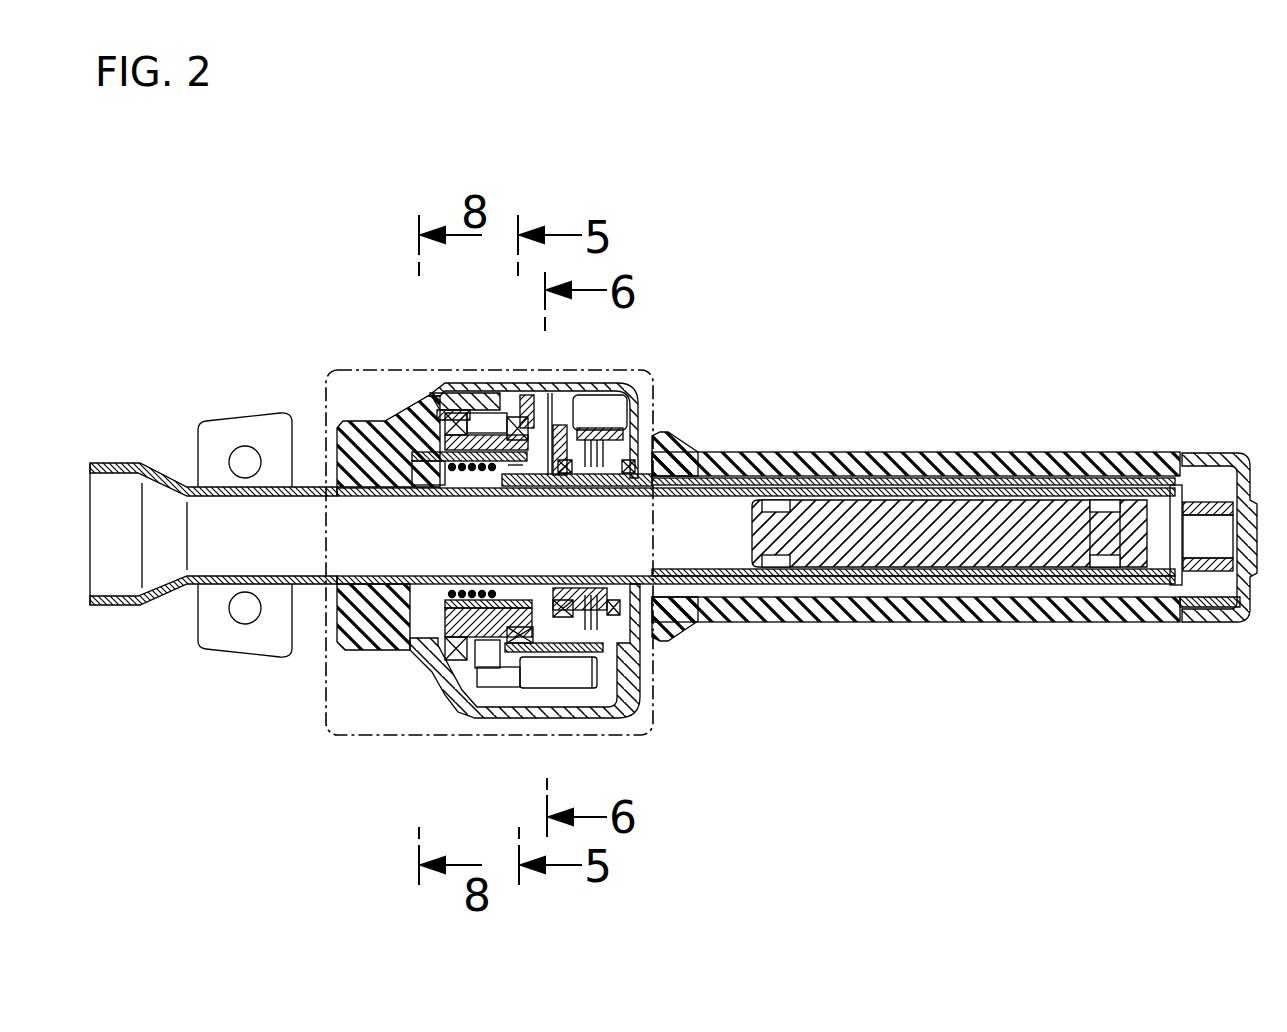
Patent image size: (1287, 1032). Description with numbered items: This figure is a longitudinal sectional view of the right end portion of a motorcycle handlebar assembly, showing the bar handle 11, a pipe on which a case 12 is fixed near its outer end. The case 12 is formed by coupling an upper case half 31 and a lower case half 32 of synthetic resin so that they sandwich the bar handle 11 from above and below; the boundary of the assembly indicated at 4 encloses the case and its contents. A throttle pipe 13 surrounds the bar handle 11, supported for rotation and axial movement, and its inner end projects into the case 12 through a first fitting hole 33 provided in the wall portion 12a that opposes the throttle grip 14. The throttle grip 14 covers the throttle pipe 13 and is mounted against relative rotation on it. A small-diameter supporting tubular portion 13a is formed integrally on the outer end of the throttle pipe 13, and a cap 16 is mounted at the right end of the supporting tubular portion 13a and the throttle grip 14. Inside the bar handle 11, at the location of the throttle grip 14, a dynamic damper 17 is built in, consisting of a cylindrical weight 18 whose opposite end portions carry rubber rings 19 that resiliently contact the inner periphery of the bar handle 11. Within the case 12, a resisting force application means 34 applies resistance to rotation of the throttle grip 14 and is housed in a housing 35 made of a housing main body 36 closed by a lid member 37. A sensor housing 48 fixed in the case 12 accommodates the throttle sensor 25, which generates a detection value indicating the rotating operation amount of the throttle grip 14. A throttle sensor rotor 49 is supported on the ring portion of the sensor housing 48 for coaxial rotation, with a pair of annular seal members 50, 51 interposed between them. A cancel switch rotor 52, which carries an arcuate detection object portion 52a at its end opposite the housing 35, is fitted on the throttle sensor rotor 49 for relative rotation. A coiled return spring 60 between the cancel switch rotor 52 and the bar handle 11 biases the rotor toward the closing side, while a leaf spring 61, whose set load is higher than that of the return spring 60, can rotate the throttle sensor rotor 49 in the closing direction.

The drive unit 4 is at (647, 373).
The bar handle 11 is at (313, 485).
The case 12 is at (302, 318).
The wall portion 12a is at (645, 412).
The throttle pipe 13 is at (805, 462).
The supporting tubular portion 13a is at (1207, 602).
The throttle grip 14 is at (880, 460).
The cap 16 is at (1206, 455).
The dynamic damper 17 is at (1160, 515).
The weight 18 is at (995, 570).
The rubber ring 19 is at (800, 575).
The throttle sensor 25 is at (582, 672).
The upper case half 31 is at (388, 437).
The lower case half 32 is at (365, 590).
The first fitting hole 33 is at (628, 497).
The resisting force application means 34 is at (600, 585).
The housing 35 is at (617, 646).
The housing main body 36 is at (610, 400).
The lid member 37 is at (562, 400).
The sensor housing 48 is at (470, 700).
The throttle sensor rotor 49 is at (477, 410).
The annular seal member 50 is at (515, 412).
The annular seal member 51 is at (455, 398).
The cancel switch rotor 52 is at (457, 467).
The detection object portion 52a is at (427, 467).
The return spring 60 is at (472, 470).
The leaf spring 61 is at (533, 497).